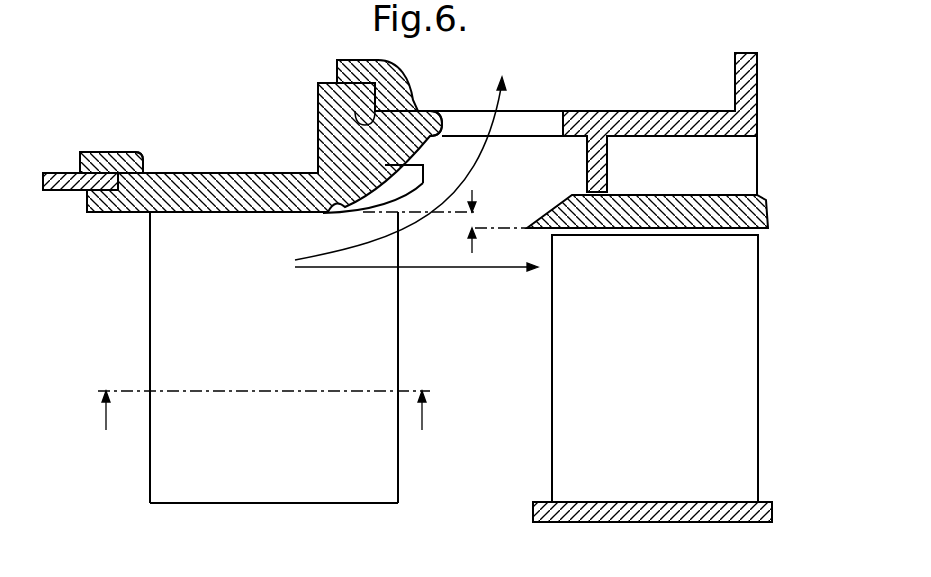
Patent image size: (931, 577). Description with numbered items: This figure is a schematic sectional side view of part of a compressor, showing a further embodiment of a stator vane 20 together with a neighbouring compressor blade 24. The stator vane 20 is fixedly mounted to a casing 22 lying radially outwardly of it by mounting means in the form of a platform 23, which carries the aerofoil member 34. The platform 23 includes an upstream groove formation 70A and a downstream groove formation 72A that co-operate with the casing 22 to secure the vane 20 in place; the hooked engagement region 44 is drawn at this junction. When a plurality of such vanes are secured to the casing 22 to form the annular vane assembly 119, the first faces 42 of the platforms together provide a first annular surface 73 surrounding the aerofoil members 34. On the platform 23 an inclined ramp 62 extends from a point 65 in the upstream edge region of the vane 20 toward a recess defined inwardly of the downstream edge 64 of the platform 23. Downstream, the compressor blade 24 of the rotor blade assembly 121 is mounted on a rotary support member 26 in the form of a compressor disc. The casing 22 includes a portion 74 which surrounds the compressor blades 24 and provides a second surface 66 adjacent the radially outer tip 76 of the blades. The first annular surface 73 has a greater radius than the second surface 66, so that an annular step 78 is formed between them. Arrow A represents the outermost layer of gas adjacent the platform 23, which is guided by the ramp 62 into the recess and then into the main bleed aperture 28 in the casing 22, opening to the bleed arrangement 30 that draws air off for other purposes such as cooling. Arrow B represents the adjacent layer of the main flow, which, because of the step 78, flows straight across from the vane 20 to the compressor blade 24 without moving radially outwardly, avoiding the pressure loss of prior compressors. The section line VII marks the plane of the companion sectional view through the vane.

The stator vane 20 is at (185, 350).
The casing 22 is at (58, 172).
The platform 23 is at (135, 195).
The compressor blade 24 is at (736, 453).
The rotary support member 26 is at (730, 513).
The main bleed aperture 28 is at (565, 118).
The bleed arrangement 30 is at (608, 95).
The aerofoil member 34 is at (180, 474).
The first face 42 is at (167, 213).
The hook portion 44 is at (360, 123).
The ramp 62 is at (425, 183).
The downstream edge 64 is at (437, 134).
The point 65 is at (333, 204).
The second surface 66 is at (650, 228).
The upstream groove formation 70A is at (108, 142).
The downstream groove formation 72A is at (340, 93).
The first annular surface 73 is at (250, 223).
The casing portion 74 is at (767, 199).
The radially outer tip 76 is at (709, 234).
The annular step 78 is at (482, 215).
The vane assembly 119 is at (201, 224).
The rotor blade assembly 121 is at (736, 400).
The arrow A is at (497, 104).
The arrow B is at (427, 268).
The section line VII is at (263, 424).